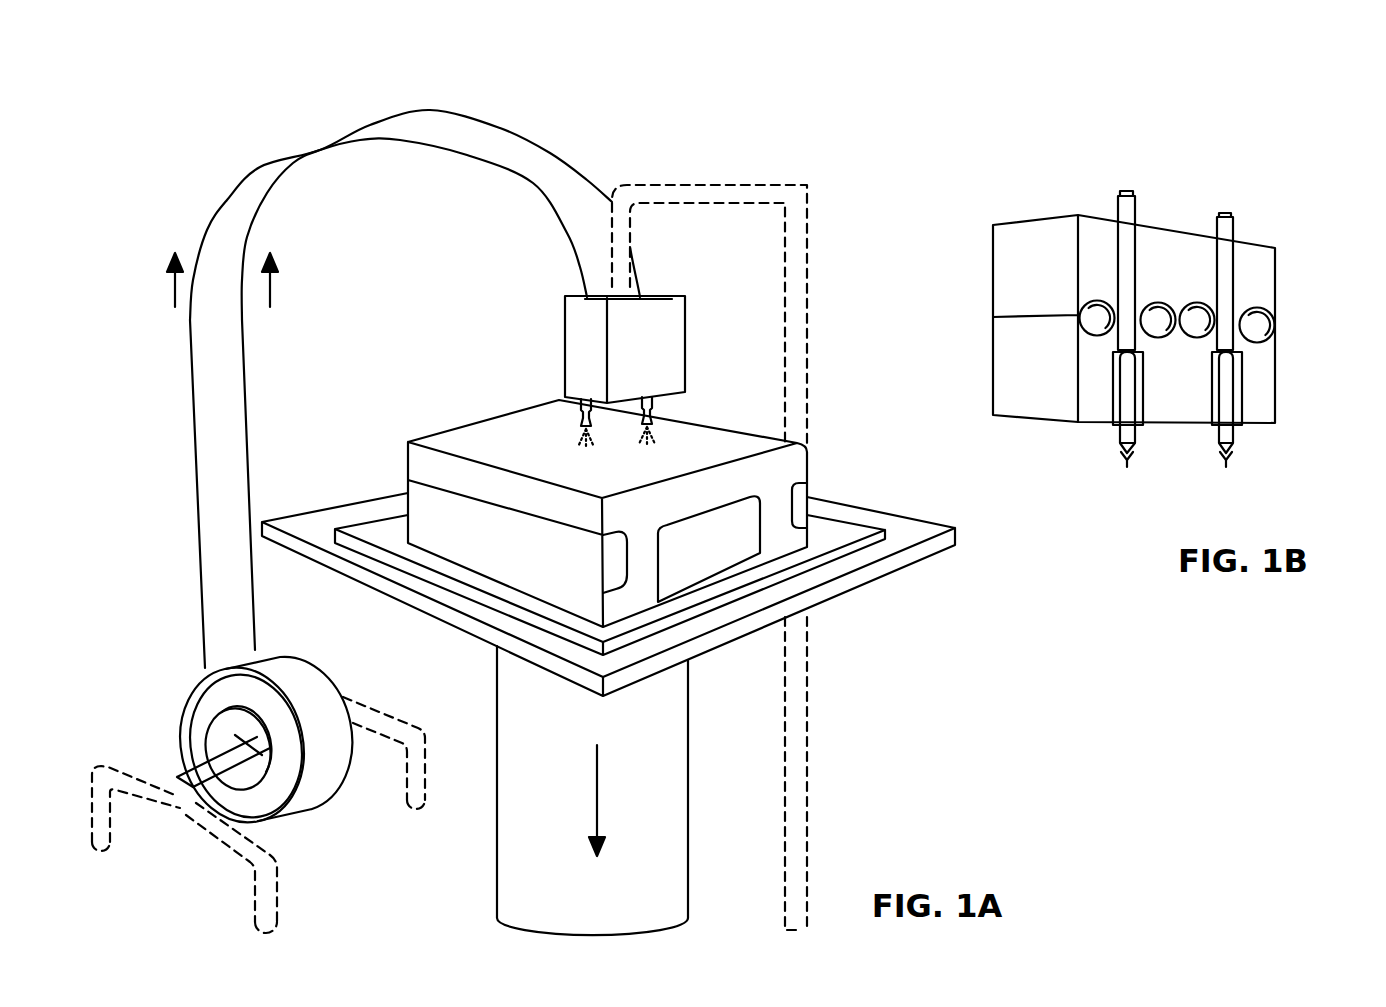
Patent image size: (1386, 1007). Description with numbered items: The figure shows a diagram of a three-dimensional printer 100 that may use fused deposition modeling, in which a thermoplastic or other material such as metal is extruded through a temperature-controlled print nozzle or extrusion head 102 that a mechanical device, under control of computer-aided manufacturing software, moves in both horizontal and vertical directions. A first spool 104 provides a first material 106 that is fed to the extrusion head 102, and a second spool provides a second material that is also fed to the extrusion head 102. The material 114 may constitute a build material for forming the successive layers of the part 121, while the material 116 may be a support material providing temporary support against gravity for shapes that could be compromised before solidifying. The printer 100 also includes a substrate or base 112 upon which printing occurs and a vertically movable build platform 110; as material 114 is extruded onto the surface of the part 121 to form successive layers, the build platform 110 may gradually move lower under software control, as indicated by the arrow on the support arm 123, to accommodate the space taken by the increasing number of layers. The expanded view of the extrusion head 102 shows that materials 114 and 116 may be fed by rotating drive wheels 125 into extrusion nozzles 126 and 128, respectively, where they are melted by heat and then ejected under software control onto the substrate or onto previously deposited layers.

In FIG. 1A, the 3-D printer 100 is at (190, 95).
In FIG. 1A, the extrusion head 102 is at (667, 347).
In FIG. 1B, the extrusion head 102 is at (1062, 213).
In FIG. 1A, the first spool 104 is at (203, 688).
In FIG. 1A, the first material 106 is at (303, 670).
In FIG. 1A, the build platform 110 is at (348, 512).
In FIG. 1A, the base 112 is at (842, 530).
In FIG. 1A, the material 114 is at (190, 383).
In FIG. 1B, the material 114 is at (1128, 190).
In FIG. 1A, the material 116 is at (248, 387).
In FIG. 1B, the material 116 is at (1227, 215).
In FIG. 1A, the part 121 is at (488, 435).
In FIG. 1A, the support arm 123 is at (668, 820).
In FIG. 1B, the rotating drive wheels 125 is at (1275, 325).
In FIG. 1B, the extrusion nozzle 126 is at (1128, 410).
In FIG. 1B, the extrusion nozzle 128 is at (1225, 405).